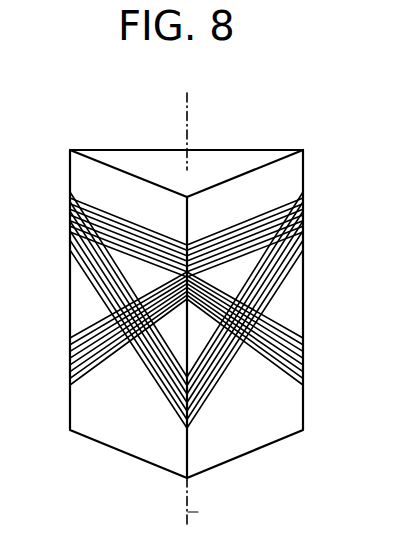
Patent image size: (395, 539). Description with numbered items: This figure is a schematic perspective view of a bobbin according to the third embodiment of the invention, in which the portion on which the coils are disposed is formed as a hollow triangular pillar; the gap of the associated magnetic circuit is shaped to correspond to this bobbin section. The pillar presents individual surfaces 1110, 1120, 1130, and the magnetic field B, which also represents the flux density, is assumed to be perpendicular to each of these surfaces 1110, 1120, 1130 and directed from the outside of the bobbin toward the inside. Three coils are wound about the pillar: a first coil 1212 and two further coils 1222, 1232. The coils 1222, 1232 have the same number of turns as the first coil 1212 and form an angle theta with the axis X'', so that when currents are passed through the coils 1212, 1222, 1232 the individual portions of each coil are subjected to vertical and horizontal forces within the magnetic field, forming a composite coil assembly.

The surface 1110 is at (282, 150).
The surface 1120 is at (128, 172).
The surface 1130 is at (232, 178).
The first coil 1212 is at (92, 279).
The coil 1222 is at (153, 232).
The coil 1232 is at (101, 363).